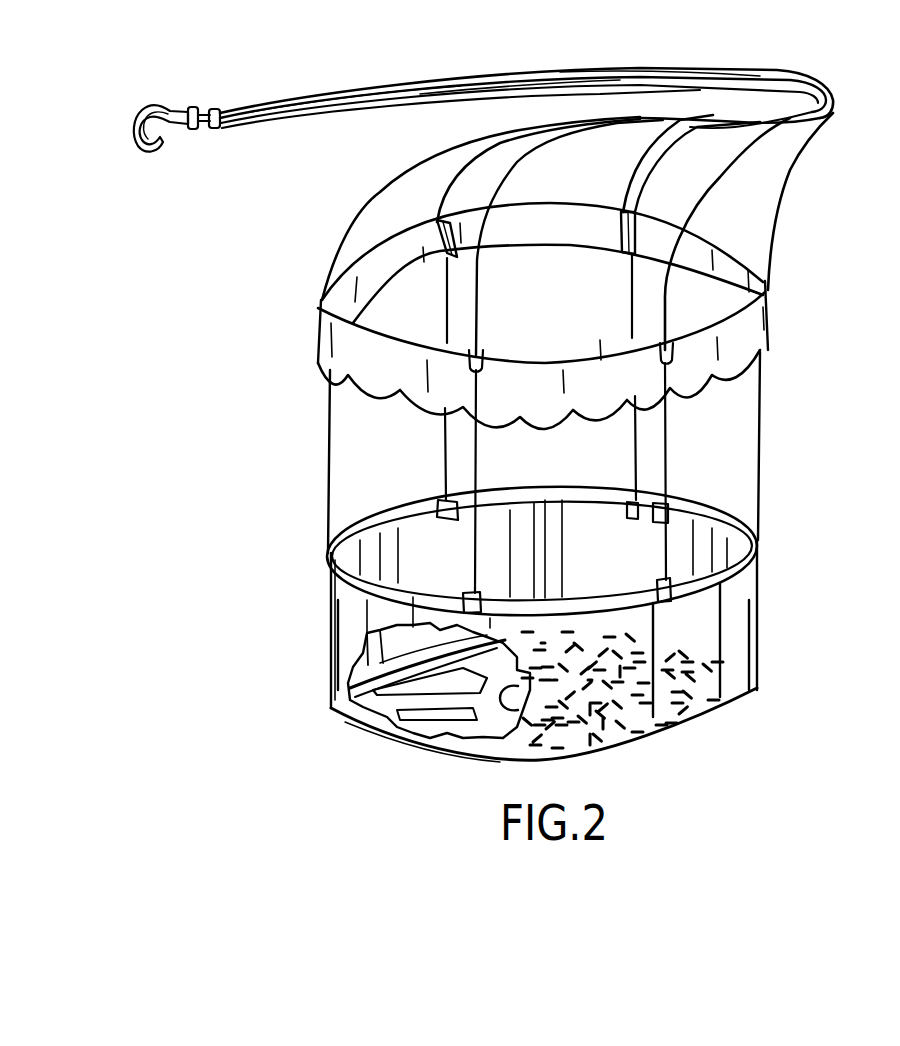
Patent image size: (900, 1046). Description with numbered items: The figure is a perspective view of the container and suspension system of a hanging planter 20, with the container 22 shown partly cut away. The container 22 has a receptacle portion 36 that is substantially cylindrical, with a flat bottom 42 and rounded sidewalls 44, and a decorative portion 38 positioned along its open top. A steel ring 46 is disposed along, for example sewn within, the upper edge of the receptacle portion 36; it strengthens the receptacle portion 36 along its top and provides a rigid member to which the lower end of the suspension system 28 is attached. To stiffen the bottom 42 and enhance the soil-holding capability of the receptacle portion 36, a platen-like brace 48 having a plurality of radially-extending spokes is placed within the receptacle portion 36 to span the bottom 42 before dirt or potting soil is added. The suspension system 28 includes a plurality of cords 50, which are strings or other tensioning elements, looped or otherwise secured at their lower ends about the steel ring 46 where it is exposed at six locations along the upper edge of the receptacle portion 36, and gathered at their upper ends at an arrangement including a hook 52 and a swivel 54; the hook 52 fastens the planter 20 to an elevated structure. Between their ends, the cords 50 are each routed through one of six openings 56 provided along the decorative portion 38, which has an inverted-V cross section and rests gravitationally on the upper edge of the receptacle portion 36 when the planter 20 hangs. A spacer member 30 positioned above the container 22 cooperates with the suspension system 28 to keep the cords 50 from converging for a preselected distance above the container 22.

The planter 20 is at (778, 463).
The container 22 is at (787, 668).
The suspension system 28 is at (363, 200).
The spacer member 30 is at (777, 184).
The receptacle portion 36 is at (352, 630).
The decorative portion 38 is at (320, 348).
The bottom 42 is at (660, 738).
The sidewalls 44 is at (737, 611).
The steel ring 46 is at (462, 502).
The brace 48 is at (423, 699).
The cords 50 is at (420, 170).
The hook 52 is at (153, 150).
The swivel 54 is at (203, 122).
The openings 56 is at (326, 297).